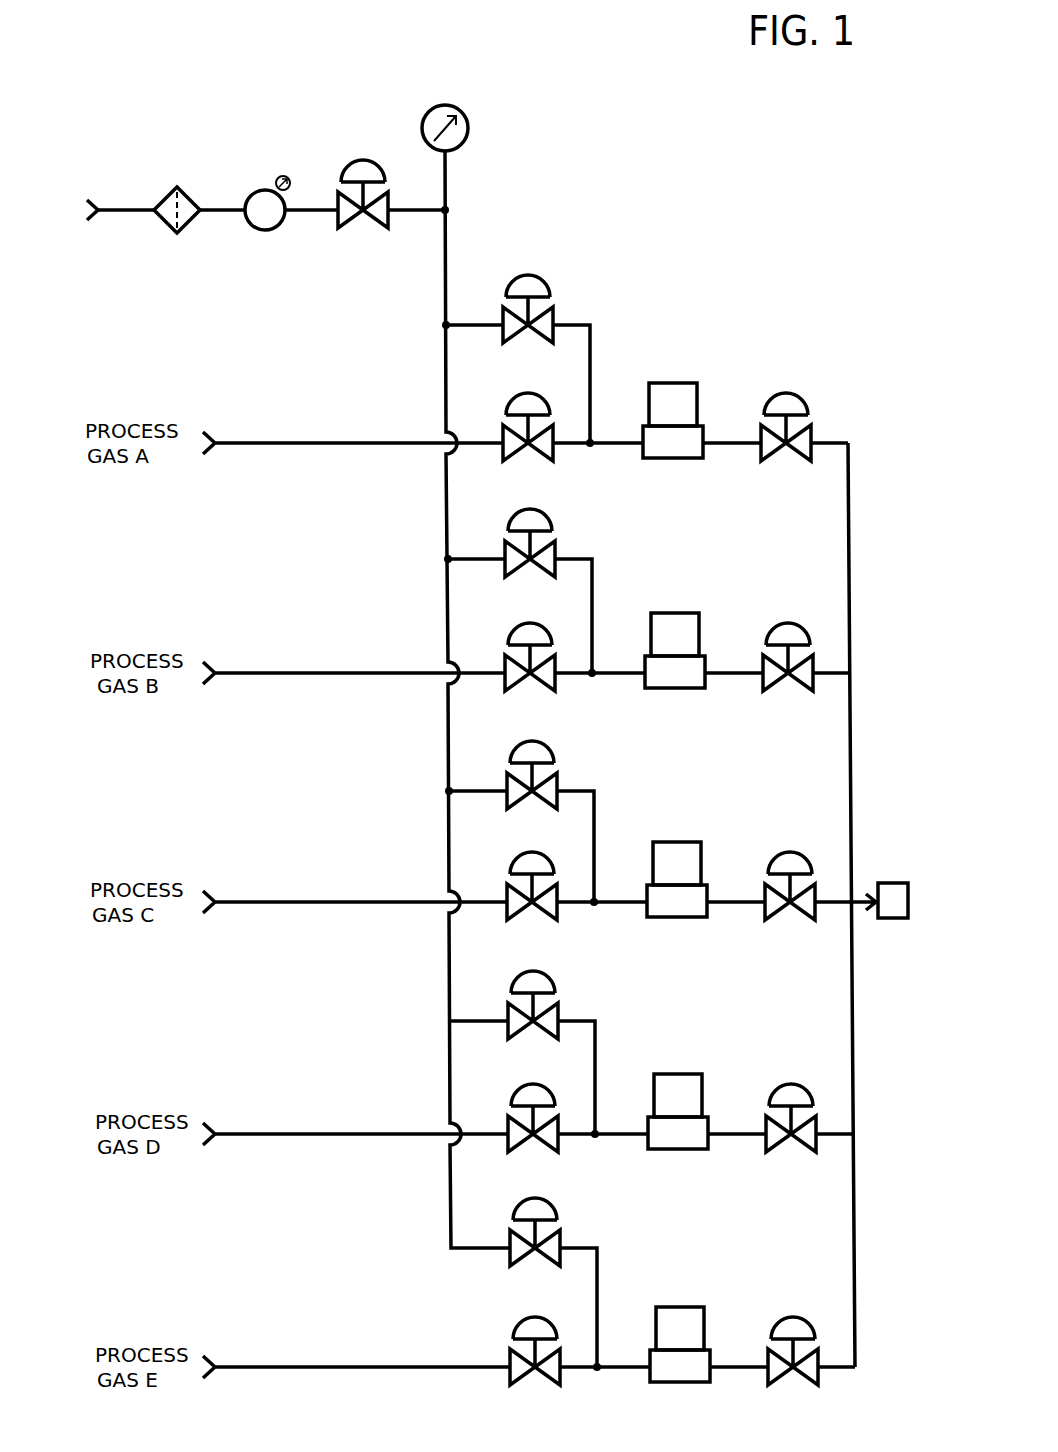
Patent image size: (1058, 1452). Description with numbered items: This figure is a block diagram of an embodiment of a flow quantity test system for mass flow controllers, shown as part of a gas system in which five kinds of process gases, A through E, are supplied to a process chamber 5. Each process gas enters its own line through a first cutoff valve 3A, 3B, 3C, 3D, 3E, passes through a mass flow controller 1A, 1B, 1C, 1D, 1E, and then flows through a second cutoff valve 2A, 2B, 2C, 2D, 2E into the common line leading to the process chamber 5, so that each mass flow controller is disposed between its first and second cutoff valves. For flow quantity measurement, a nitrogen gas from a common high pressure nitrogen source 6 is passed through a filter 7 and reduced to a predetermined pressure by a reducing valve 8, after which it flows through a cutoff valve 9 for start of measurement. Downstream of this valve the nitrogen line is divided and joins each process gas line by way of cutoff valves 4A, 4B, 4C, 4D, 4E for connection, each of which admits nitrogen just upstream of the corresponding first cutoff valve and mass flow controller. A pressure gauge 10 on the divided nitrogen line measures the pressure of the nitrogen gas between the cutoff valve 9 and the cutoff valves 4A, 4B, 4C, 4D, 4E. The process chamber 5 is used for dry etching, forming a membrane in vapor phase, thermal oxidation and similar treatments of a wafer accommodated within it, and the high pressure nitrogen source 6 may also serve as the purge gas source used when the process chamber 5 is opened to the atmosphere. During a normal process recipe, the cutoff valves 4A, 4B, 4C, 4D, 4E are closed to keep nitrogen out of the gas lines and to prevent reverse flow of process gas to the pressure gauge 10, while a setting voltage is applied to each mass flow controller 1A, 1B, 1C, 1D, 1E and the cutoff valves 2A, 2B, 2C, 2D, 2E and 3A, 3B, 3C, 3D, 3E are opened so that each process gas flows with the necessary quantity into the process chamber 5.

The mass flow controller 1A is at (680, 383).
The mass flow controller 1B is at (682, 613).
The mass flow controller 1C is at (684, 842).
The mass flow controller 1D is at (678, 1074).
The mass flow controller 1E is at (676, 1307).
The second cutoff valve 2A is at (792, 390).
The second cutoff valve 2B is at (794, 620).
The second cutoff valve 2C is at (796, 850).
The second cutoff valve 2D is at (797, 1082).
The second cutoff valve 2E is at (798, 1317).
The first cutoff valve 3A is at (507, 408).
The first cutoff valve 3B is at (509, 640).
The first cutoff valve 3C is at (511, 870).
The first cutoff valve 3D is at (521, 1090).
The first cutoff valve 3E is at (516, 1328).
The cutoff valve for connection 4A is at (533, 275).
The cutoff valve for connection 4B is at (551, 514).
The cutoff valve for connection 4C is at (552, 745).
The cutoff valve for connection 4D is at (551, 972).
The cutoff valve for connection 4E is at (562, 1203).
The process chamber 5 is at (893, 883).
The high pressure nitrogen source 6 is at (64, 238).
The filter 7 is at (180, 234).
The reducing valve 8 is at (270, 231).
The cutoff valve for start of measurement 9 is at (364, 160).
The pressure gauge 10 is at (470, 128).